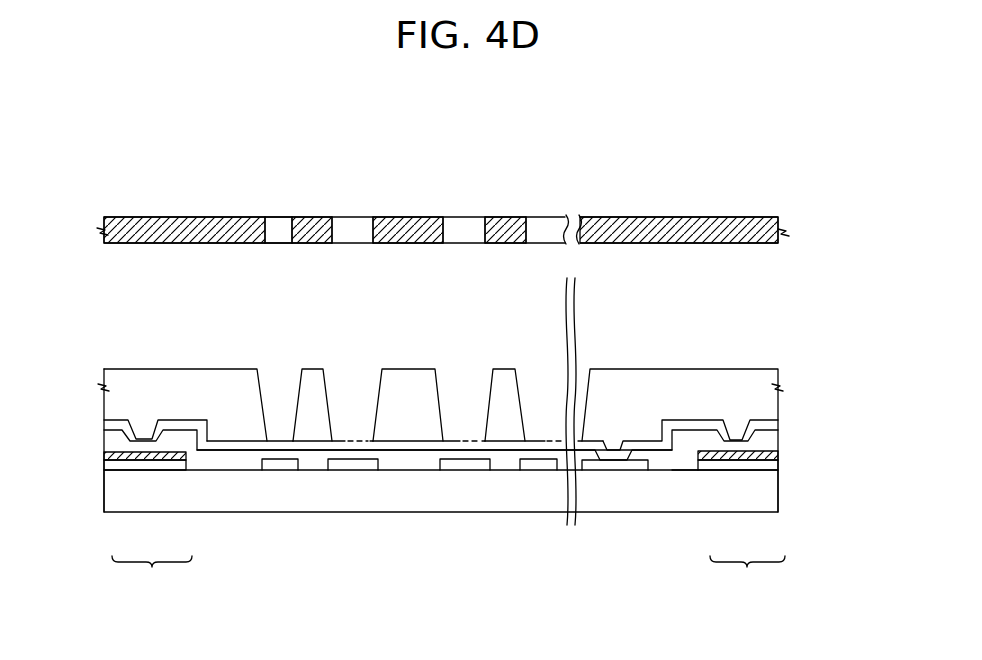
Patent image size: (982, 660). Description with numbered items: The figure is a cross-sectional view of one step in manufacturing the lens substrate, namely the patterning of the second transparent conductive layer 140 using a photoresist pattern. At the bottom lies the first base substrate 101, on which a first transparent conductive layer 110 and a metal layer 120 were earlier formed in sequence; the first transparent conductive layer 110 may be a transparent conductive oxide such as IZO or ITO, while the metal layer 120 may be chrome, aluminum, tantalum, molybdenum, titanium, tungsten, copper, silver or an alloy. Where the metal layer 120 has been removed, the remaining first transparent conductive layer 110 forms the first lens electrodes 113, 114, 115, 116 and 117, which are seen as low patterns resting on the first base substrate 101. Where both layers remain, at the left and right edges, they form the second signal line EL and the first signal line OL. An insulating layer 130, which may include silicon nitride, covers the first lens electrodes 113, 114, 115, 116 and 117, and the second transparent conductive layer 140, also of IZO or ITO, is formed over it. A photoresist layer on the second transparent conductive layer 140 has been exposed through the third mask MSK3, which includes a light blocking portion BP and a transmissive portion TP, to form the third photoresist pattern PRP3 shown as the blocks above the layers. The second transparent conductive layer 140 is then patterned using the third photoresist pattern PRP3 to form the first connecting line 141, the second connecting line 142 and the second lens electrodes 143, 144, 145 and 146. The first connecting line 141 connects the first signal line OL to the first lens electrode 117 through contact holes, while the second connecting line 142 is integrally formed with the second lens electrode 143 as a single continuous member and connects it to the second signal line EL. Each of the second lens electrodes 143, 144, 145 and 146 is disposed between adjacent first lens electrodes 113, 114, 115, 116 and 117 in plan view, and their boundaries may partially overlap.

The first base substrate 101 is at (104, 490).
The first transparent conductive layer 110 is at (133, 470).
The metal layer 120 is at (172, 458).
The first lens electrode 113 is at (278, 468).
The first lens electrode 114 is at (350, 468).
The first lens electrode 115 is at (465, 468).
The first lens electrode 116 is at (533, 468).
The first lens electrode 117 is at (615, 468).
The insulating layer 130 is at (768, 442).
The second transparent conductive layer 140 is at (768, 425).
The first connecting line 141 is at (686, 432).
The second connecting line 142 is at (223, 447).
The second lens electrode 143 is at (258, 446).
The second lens electrode 144 is at (330, 445).
The second lens electrode 145 is at (442, 444).
The second lens electrode 146 is at (523, 444).
The third mask MSK3 is at (682, 217).
The light blocking portion BP is at (198, 217).
The transmissive portion TP is at (280, 217).
The third photoresist pattern PRP3 is at (738, 378).
The second signal line EL is at (152, 573).
The first signal line OL is at (747, 574).